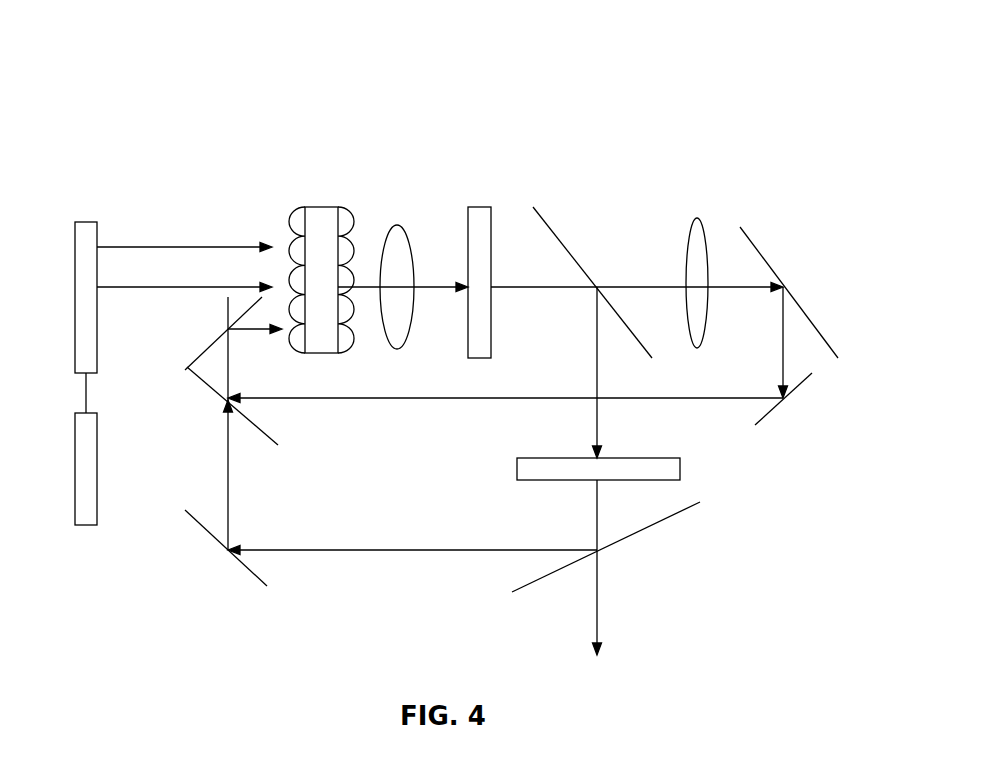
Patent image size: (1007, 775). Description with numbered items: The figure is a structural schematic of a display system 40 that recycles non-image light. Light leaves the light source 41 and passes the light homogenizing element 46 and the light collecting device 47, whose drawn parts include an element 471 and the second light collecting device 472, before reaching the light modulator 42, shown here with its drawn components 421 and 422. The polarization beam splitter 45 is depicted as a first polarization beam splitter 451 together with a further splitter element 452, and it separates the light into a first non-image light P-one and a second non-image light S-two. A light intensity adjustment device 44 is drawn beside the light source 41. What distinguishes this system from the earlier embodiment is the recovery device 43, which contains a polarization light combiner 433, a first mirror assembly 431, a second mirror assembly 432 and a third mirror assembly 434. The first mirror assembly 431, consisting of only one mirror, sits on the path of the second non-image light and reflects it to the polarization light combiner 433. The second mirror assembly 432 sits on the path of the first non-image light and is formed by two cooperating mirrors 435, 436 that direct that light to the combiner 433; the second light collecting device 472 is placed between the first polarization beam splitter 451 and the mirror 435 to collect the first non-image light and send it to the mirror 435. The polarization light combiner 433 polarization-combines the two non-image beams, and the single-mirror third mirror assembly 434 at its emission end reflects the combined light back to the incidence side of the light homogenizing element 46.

The display system 40 is at (457, 90).
The light source 41 is at (86, 222).
The light modulator 42 is at (380, 160).
The first modulation plate 421 is at (468, 207).
The second modulation plate 422 is at (517, 470).
The recovery device 43 is at (292, 570).
The first mirror assembly 431 is at (210, 530).
The second mirror assembly 432 is at (790, 175).
The polarization light combiner 433 is at (260, 432).
The third mirror assembly 434 is at (222, 332).
The mirror 435 is at (759, 263).
The mirror 436 is at (783, 400).
The light intensity adjustment device 44 is at (97, 505).
The polarization beam splitter 45 is at (543, 160).
The first polarization beam splitter 451 is at (548, 220).
The second beam splitter 452 is at (650, 545).
The light homogenizing element 46 is at (323, 206).
The light collecting device 47 is at (700, 137).
The first lens 471 is at (388, 243).
The second light collecting device 472 is at (693, 222).